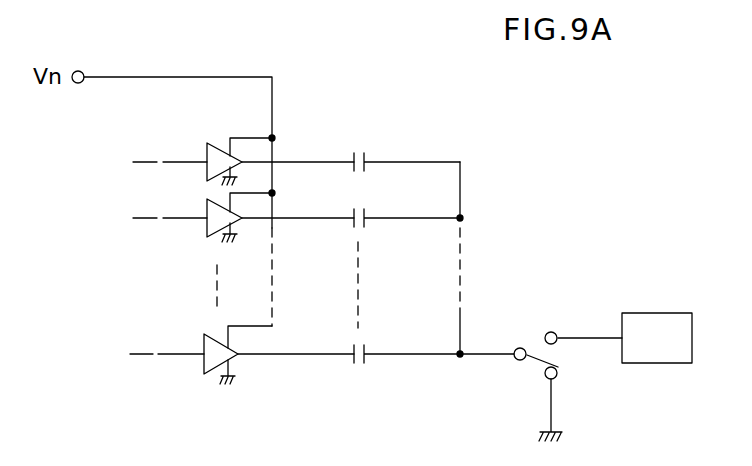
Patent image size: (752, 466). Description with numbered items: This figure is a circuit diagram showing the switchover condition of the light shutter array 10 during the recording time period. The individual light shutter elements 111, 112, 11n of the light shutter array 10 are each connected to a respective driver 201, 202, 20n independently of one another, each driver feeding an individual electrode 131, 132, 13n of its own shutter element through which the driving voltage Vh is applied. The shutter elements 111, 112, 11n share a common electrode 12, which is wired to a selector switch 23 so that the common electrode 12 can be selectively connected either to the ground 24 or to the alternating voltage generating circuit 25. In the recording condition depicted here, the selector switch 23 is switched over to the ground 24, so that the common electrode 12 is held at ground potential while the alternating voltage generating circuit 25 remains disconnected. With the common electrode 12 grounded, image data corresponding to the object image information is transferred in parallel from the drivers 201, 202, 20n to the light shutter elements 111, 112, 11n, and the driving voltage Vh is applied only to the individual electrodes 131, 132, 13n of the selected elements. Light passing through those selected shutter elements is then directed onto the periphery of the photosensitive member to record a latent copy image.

The light shutter array 10 is at (372, 130).
The light shutter element 111 is at (363, 153).
The light shutter element 112 is at (359, 210).
The light shutter element 11n is at (358, 362).
The common electrode 12 is at (460, 330).
The individual electrode 131 is at (318, 160).
The individual electrode 132 is at (318, 222).
The individual electrode 13n is at (306, 357).
The driver 201 is at (207, 150).
The driver 202 is at (207, 208).
The driver 20n is at (204, 366).
The selector switch 23 is at (528, 372).
The ground 24 is at (554, 434).
The alternating voltage generating circuit 25 is at (658, 318).